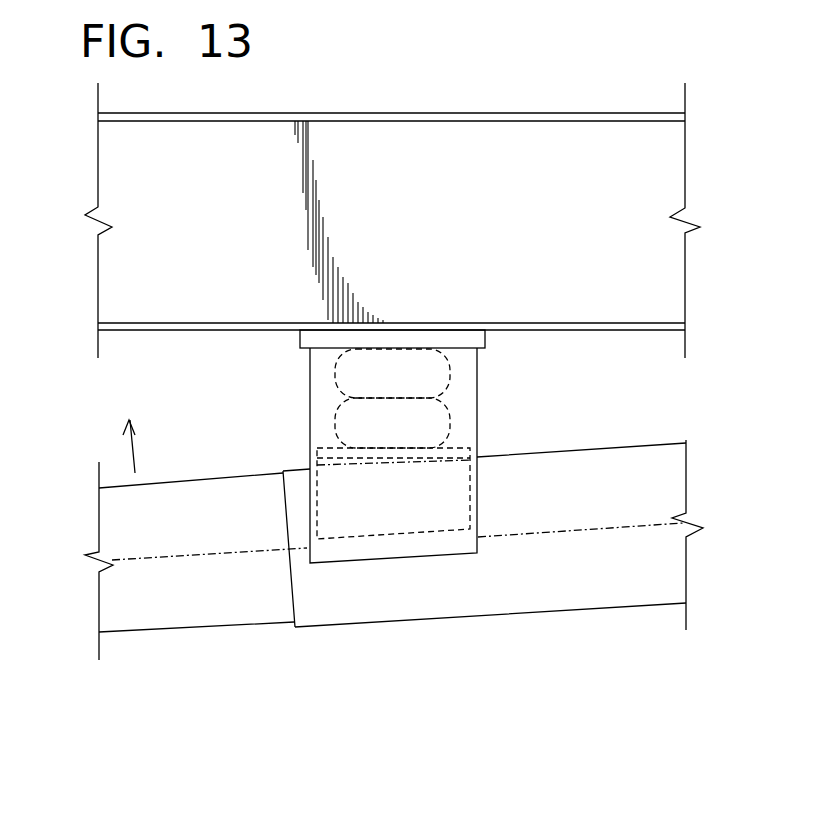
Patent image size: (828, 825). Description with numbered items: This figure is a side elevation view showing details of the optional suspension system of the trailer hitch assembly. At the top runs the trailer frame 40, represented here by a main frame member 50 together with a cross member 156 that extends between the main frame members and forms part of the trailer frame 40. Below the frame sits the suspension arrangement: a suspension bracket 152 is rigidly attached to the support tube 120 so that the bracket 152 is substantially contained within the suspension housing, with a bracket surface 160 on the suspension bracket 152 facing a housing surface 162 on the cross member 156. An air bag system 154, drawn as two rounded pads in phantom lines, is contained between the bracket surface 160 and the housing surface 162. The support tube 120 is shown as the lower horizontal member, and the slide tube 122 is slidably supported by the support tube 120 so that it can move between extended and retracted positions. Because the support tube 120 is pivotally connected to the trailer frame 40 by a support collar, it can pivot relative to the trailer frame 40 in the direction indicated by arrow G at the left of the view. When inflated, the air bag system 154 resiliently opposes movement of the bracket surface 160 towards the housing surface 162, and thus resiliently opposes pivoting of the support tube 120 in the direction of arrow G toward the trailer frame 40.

The trailer frame 40 is at (537, 97).
The main frame member 50 is at (357, 162).
The cross member 156 is at (328, 342).
The bracket surface 160 is at (455, 448).
The suspension bracket 152 is at (330, 448).
The housing surface 162 is at (460, 350).
The air bag system 154 is at (452, 384).
The slide tube 122 is at (173, 613).
The support tube 120 is at (535, 593).
The arrow G is at (128, 452).